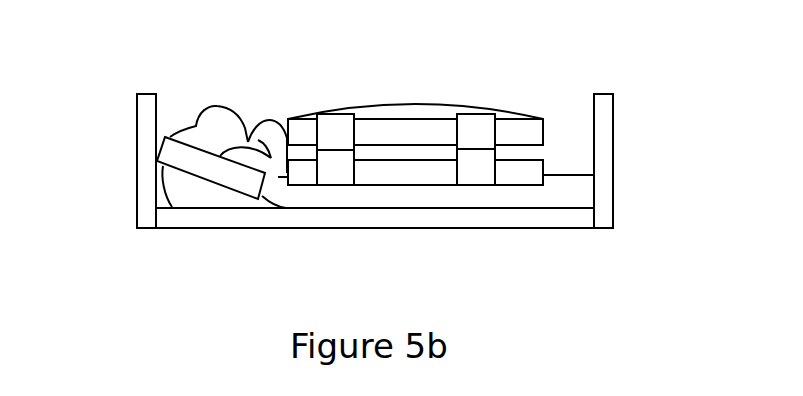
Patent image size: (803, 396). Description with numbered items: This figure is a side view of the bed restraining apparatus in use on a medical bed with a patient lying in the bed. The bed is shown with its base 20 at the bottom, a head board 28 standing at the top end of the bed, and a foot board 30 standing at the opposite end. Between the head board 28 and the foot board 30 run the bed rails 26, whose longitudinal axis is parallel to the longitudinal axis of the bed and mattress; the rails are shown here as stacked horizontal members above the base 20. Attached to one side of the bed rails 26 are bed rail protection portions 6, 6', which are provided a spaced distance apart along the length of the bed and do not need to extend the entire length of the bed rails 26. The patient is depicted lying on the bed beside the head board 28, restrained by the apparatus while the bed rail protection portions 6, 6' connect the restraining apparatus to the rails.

The base 20 is at (223, 219).
The bed rails 26 is at (523, 133).
The head board 28 is at (145, 178).
The foot board 30 is at (602, 173).
The bed rail protection portion 6 is at (335, 209).
The bed rail protection portion 6' is at (472, 204).